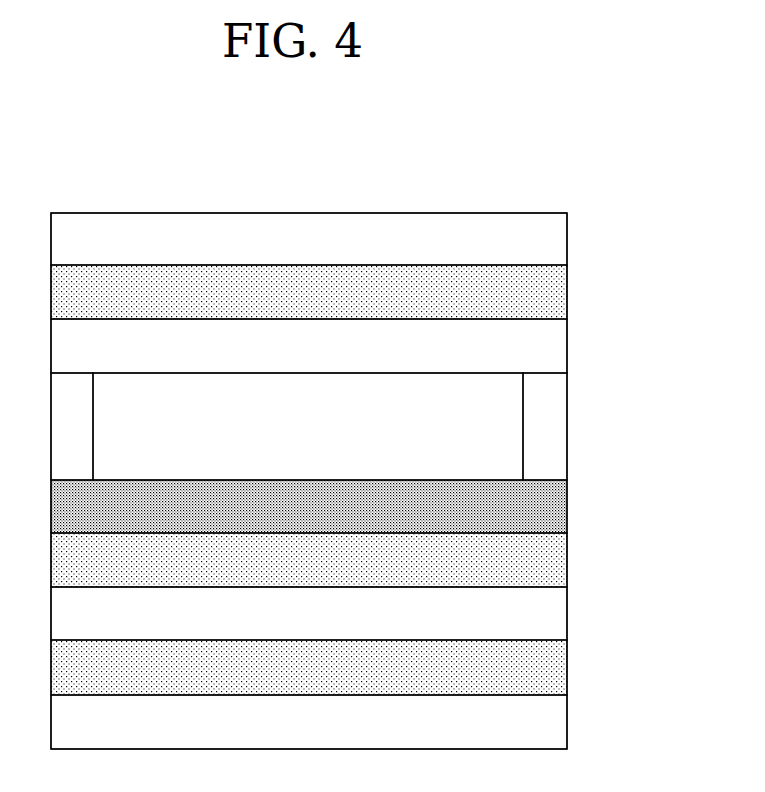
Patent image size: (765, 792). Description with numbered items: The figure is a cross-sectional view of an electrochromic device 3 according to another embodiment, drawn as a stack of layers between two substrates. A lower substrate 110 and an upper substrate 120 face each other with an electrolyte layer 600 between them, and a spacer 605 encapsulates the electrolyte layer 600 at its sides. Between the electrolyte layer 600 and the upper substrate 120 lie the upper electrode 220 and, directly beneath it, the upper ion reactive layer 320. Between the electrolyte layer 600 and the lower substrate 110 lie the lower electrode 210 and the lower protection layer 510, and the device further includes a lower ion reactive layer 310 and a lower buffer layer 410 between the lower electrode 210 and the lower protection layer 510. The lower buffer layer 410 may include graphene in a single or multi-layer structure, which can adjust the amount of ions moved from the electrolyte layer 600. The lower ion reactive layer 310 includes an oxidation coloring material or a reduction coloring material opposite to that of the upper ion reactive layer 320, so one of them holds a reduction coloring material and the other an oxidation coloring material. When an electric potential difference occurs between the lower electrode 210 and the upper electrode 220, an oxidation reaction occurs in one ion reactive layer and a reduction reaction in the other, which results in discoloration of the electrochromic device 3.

The electrochromic device 3 is at (315, 178).
The upper substrate 120 is at (558, 238).
The upper electrode 220 is at (558, 291).
The upper ion reactive layer 320 is at (558, 345).
The spacer 605 is at (558, 411).
The electrolyte layer 600 is at (498, 443).
The lower protection layer 510 is at (558, 506).
The lower buffer layer 410 is at (558, 561).
The lower ion reactive layer 310 is at (558, 614).
The lower electrode 210 is at (558, 667).
The lower substrate 110 is at (558, 722).